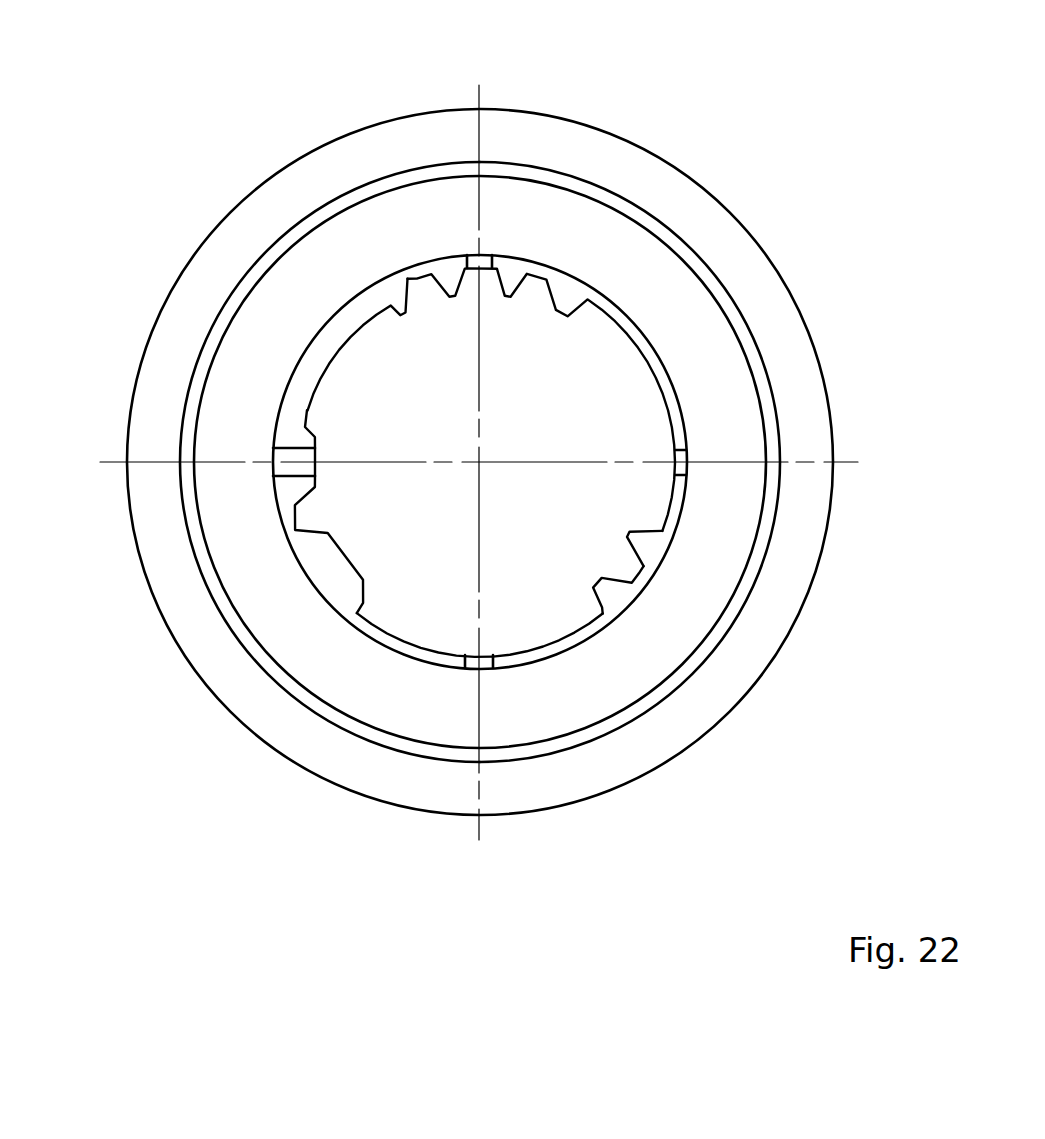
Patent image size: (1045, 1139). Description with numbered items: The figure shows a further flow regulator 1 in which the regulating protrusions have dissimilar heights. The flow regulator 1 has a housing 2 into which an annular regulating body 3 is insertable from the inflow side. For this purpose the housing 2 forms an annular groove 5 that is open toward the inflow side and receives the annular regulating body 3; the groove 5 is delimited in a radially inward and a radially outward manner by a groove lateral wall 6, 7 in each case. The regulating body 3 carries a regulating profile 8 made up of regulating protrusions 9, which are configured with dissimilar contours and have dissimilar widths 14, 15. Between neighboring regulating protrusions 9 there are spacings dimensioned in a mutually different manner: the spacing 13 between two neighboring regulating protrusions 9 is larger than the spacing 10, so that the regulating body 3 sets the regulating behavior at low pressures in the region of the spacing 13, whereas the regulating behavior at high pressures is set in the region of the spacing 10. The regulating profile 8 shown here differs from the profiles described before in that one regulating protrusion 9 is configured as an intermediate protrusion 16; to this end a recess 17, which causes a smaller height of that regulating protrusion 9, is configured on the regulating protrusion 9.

The flow regulator 1 is at (777, 108).
The housing 2 is at (238, 217).
The regulating body 3 is at (518, 210).
The annular groove 5 is at (375, 742).
The groove lateral wall 6 is at (617, 625).
The groove lateral wall 7 is at (186, 482).
The regulating profile 8 is at (678, 408).
The regulating protrusion 9 is at (415, 297).
The spacing 10 is at (647, 547).
The spacing 13 is at (328, 572).
The width 14 is at (642, 580).
The width 15 is at (407, 650).
The intermediate protrusion 16 is at (350, 355).
The recess 17 is at (305, 393).